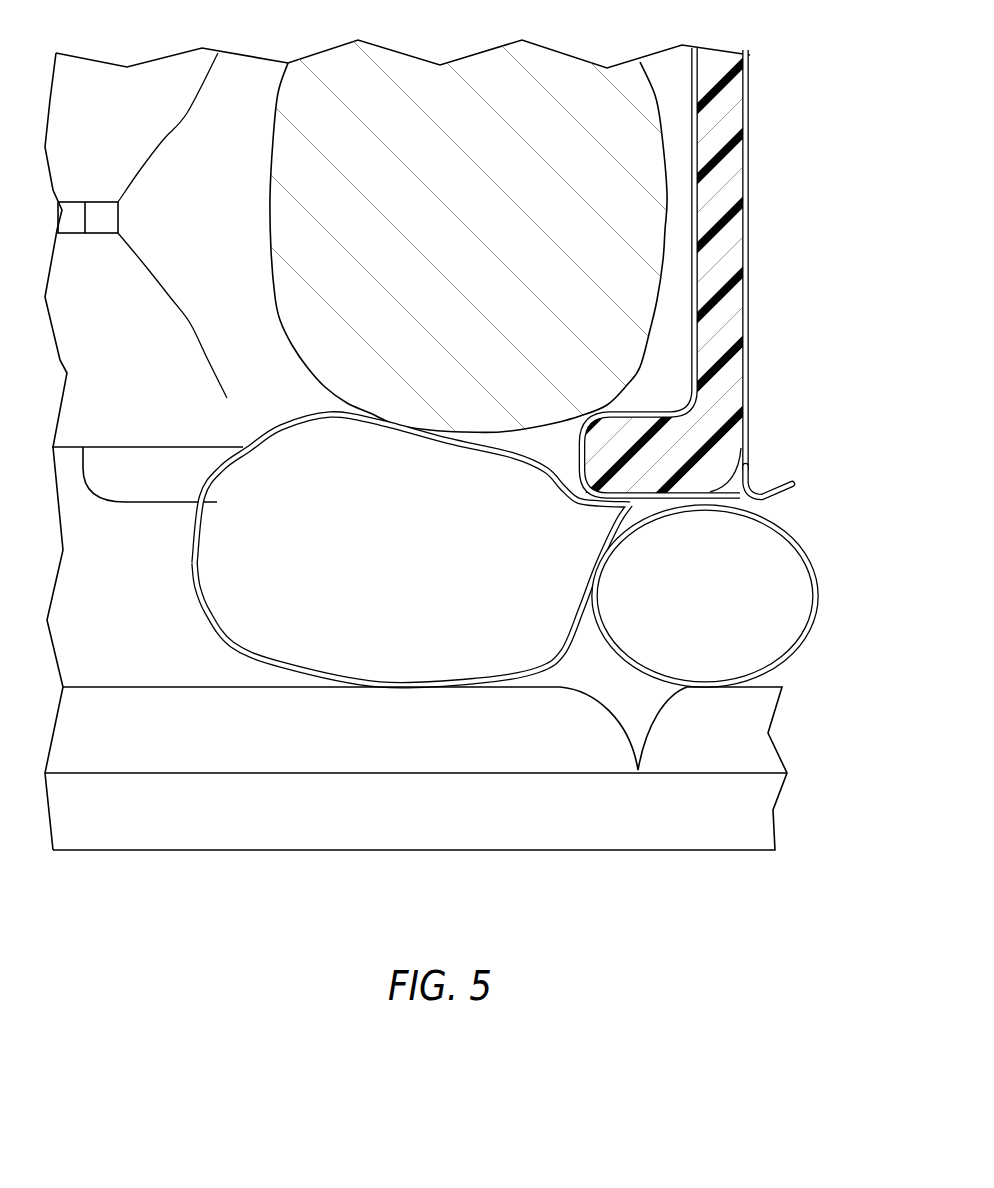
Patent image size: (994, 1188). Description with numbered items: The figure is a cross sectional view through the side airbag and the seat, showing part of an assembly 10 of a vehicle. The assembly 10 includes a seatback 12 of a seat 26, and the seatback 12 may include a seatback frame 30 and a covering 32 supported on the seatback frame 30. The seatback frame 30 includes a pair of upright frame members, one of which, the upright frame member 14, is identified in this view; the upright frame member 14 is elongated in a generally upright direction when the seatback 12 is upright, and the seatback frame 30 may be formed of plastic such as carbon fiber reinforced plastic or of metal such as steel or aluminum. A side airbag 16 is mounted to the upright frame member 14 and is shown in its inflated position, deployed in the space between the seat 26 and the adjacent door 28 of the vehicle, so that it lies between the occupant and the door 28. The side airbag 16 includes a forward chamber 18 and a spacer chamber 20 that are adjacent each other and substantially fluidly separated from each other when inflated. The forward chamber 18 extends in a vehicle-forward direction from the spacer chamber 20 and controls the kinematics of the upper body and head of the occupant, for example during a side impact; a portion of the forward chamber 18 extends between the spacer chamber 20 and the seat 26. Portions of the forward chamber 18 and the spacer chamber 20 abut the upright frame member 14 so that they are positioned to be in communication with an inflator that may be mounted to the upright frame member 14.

The assembly 10 is at (805, 525).
The seatback 12 is at (783, 142).
The upright frame member 14 is at (747, 480).
The side airbag 16 is at (185, 612).
The forward chamber 18 is at (342, 630).
The spacer chamber 20 is at (637, 667).
The seat 26 is at (753, 113).
The door 28 is at (552, 773).
The seatback frame 30 is at (657, 458).
The covering 32 is at (750, 273).